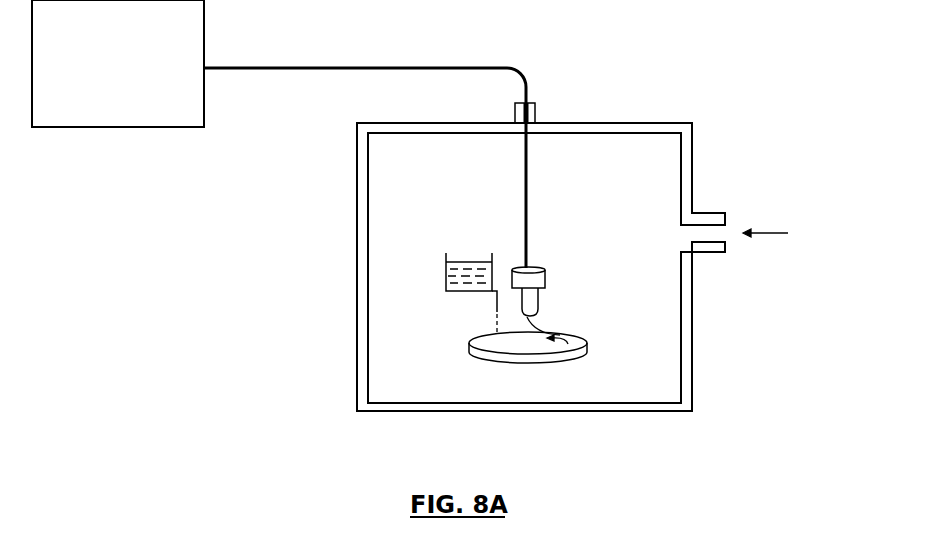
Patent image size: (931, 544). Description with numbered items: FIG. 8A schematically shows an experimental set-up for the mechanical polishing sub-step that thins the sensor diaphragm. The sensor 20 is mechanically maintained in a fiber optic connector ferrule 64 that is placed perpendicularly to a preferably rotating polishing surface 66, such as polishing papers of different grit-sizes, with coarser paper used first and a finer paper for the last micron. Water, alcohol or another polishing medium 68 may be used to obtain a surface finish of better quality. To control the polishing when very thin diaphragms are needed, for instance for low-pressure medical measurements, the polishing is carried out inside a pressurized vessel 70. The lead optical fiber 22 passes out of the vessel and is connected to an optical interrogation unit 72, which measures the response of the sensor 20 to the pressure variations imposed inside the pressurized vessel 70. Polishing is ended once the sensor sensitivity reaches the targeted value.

The sensor 20 is at (560, 335).
The lead optical fiber 22 is at (408, 66).
The fiber optic connector ferrule 64 is at (532, 303).
The polishing surface 66 is at (548, 361).
The polishing medium 68 is at (446, 281).
The pressurized vessel 70 is at (696, 347).
The optical interrogation unit 72 is at (126, 95).